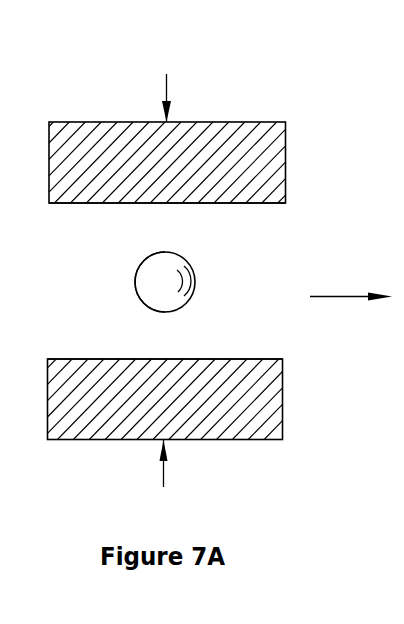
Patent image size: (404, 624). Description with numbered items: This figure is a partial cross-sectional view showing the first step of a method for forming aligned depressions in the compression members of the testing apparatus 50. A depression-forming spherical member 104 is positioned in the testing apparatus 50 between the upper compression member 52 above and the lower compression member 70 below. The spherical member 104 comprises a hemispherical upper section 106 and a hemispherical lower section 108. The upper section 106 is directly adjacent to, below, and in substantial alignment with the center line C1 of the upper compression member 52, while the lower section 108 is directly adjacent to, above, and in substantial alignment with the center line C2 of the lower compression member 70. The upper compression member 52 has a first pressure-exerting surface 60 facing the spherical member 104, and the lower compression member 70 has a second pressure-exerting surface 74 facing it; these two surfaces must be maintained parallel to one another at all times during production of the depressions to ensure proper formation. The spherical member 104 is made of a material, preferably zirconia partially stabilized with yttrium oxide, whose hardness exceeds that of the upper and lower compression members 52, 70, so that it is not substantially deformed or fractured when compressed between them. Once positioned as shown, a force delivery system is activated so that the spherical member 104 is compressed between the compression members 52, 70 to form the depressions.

The testing apparatus 50 is at (325, 64).
The upper compression member 52 is at (284, 152).
The first pressure-exerting surface 60 is at (260, 203).
The lower compression member 70 is at (233, 429).
The second pressure-exerting surface 74 is at (253, 360).
The depression-forming spherical member 104 is at (177, 262).
The hemispherical upper section 106 is at (153, 262).
The hemispherical lower section 108 is at (147, 298).
The center line of the upper compression member C1 is at (166, 88).
The center line of the lower compression member C2 is at (164, 473).